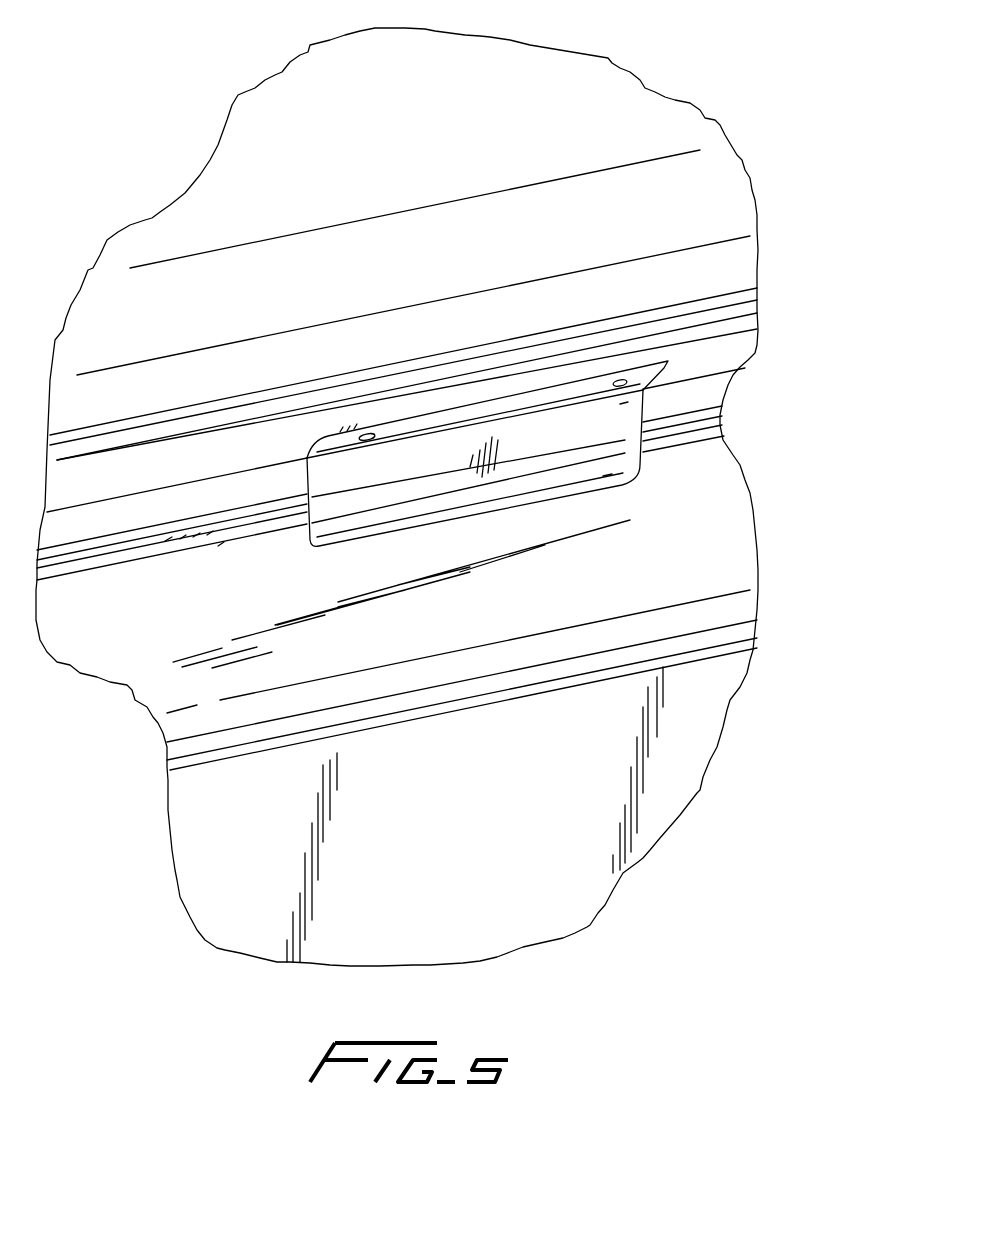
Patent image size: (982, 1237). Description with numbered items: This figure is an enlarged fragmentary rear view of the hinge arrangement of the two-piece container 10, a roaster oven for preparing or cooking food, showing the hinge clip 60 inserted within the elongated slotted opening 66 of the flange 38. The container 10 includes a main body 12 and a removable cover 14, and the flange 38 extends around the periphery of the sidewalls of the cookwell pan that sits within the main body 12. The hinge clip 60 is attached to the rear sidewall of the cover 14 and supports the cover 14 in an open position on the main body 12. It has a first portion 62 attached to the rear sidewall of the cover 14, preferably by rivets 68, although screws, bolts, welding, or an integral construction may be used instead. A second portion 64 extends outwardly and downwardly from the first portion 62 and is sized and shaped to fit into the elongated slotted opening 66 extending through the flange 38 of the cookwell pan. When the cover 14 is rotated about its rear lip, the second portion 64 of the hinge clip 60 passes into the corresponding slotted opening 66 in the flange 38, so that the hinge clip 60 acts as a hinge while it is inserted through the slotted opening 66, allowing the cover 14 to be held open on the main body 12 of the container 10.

The two-piece container 10 is at (127, 802).
The main body 12 is at (660, 790).
The removable cover 14 is at (505, 70).
The flange 38 is at (698, 520).
The hinge clip 60 is at (528, 390).
The first portion 62 is at (457, 417).
The second portion 64 is at (335, 495).
The elongated slotted opening 66 is at (515, 507).
The rivets 68 is at (370, 437).